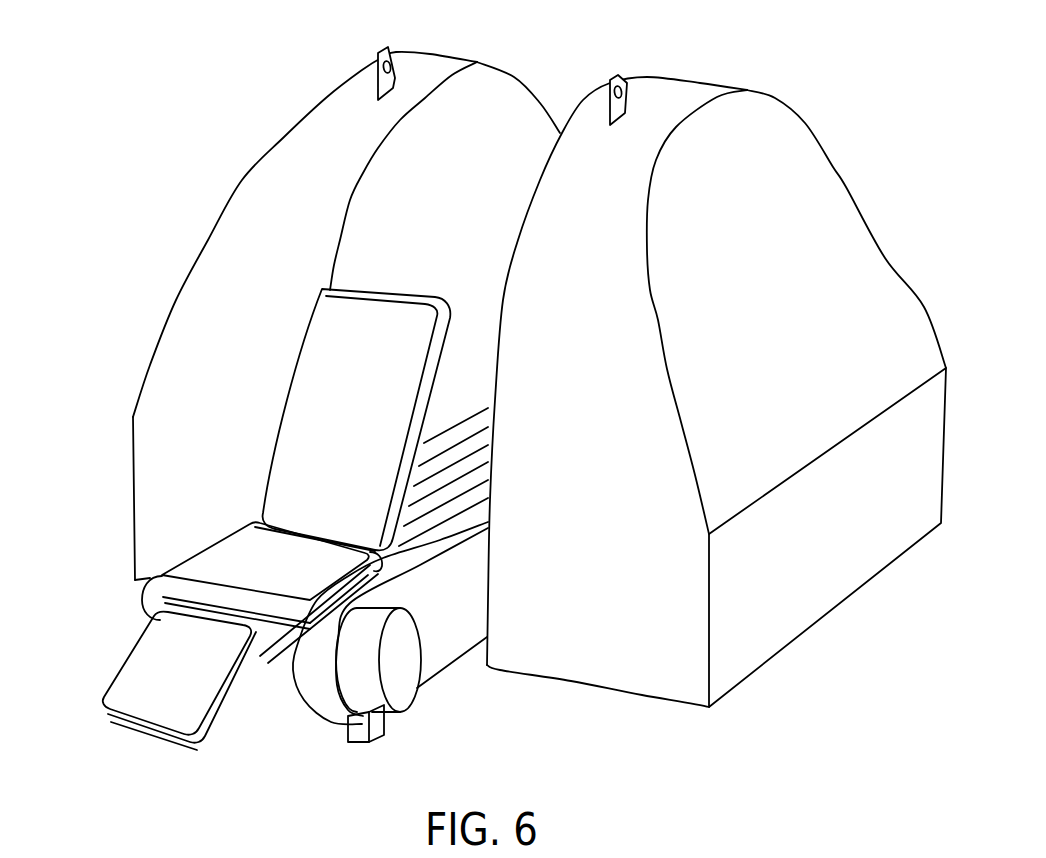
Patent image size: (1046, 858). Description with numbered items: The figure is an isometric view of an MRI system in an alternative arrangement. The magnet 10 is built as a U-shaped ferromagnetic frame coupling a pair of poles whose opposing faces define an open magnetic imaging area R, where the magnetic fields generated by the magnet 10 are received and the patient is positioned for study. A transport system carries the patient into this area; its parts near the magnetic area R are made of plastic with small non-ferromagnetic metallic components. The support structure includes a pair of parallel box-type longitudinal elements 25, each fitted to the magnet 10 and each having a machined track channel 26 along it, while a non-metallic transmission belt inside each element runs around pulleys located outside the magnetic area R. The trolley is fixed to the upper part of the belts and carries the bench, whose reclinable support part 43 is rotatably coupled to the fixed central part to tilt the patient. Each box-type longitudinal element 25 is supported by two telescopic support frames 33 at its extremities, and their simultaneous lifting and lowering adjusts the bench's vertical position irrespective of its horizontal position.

The magnet 10 is at (594, 72).
The open magnetic imaging area R is at (409, 212).
The box-type longitudinal element 25 is at (465, 607).
The track channel 26 is at (467, 503).
The telescopic support frame 33 is at (343, 727).
The reclinable support part 43 is at (108, 694).